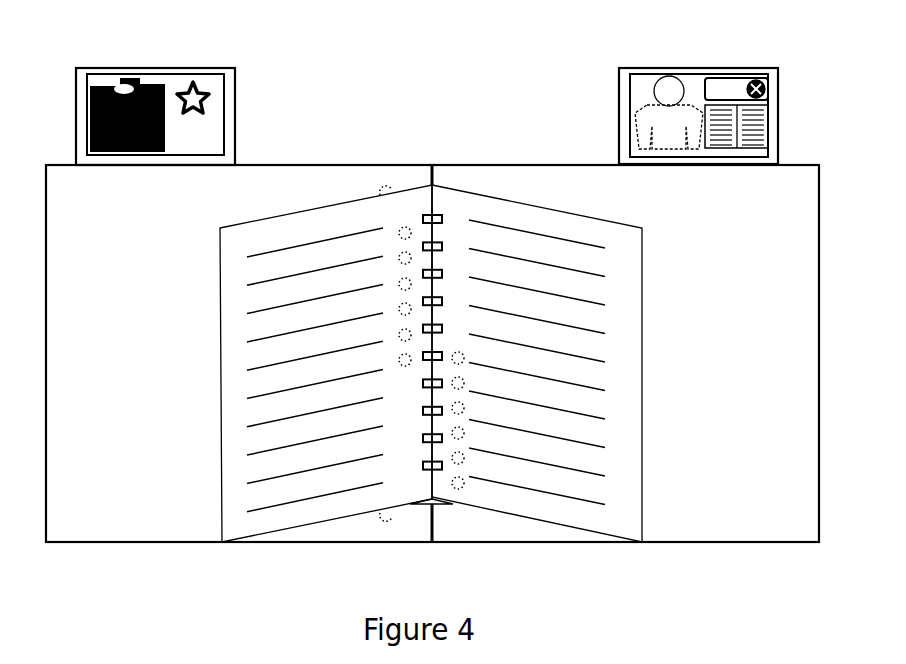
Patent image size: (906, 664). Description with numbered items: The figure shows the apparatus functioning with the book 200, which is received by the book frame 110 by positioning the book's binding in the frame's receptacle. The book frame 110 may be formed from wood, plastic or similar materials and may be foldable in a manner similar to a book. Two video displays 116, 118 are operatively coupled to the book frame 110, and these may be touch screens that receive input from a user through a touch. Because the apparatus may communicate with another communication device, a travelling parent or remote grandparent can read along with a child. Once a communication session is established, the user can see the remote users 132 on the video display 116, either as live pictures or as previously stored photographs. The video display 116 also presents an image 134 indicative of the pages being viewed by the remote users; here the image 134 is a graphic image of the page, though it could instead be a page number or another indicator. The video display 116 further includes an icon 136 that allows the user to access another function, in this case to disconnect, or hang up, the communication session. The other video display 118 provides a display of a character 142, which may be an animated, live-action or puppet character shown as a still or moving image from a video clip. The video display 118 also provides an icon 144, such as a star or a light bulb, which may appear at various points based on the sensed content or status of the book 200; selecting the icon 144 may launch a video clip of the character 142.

The book frame 110 is at (150, 495).
The video display 116 is at (778, 93).
The video display 118 is at (235, 100).
The remote users 132 is at (642, 81).
The image 134 is at (757, 132).
The icon 136 is at (733, 80).
The character 142 is at (113, 78).
The icon 144 is at (197, 84).
The book 200 is at (624, 500).